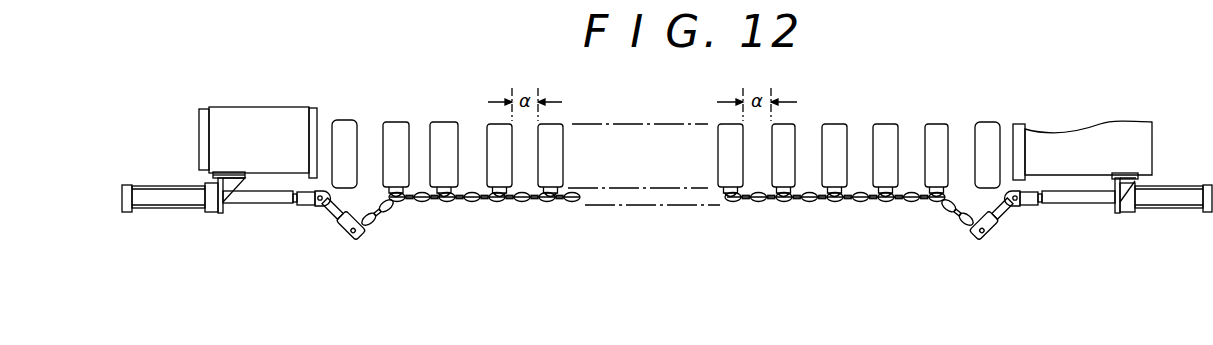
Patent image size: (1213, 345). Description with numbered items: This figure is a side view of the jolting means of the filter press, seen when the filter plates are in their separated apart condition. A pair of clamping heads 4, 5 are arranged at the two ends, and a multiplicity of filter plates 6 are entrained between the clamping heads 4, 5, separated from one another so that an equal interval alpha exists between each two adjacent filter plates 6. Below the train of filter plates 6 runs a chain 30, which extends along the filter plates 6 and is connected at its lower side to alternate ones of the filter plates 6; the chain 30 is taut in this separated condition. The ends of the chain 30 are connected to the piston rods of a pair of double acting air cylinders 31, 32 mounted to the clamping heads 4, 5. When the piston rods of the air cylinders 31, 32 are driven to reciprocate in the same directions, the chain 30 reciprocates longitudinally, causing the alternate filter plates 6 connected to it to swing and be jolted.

The clamping head 4 is at (240, 127).
The clamping head 5 is at (1120, 147).
The filter plate 6 is at (397, 133).
The chain 30 is at (476, 206).
The double acting air cylinder 31 is at (167, 200).
The double acting air cylinder 32 is at (1173, 200).